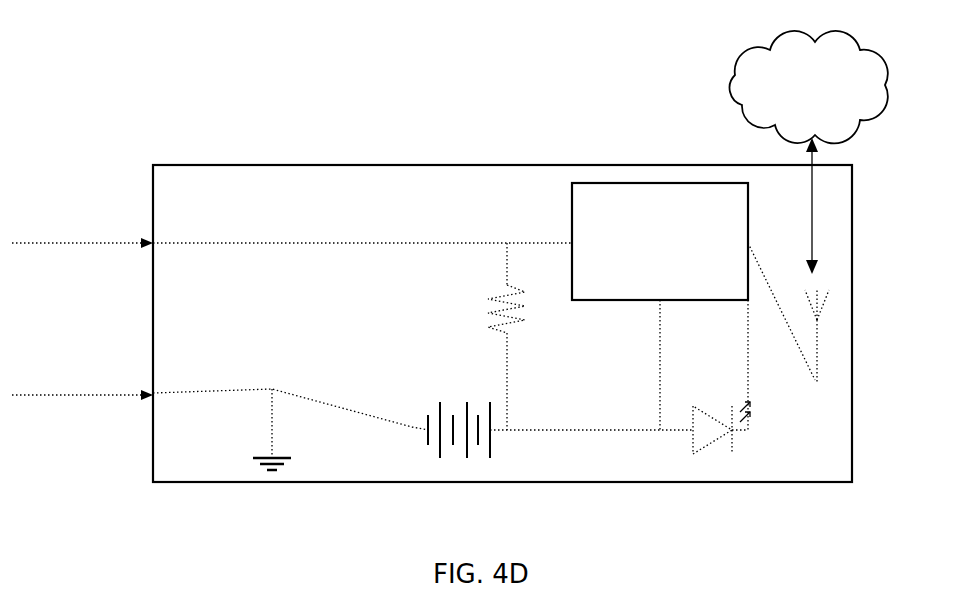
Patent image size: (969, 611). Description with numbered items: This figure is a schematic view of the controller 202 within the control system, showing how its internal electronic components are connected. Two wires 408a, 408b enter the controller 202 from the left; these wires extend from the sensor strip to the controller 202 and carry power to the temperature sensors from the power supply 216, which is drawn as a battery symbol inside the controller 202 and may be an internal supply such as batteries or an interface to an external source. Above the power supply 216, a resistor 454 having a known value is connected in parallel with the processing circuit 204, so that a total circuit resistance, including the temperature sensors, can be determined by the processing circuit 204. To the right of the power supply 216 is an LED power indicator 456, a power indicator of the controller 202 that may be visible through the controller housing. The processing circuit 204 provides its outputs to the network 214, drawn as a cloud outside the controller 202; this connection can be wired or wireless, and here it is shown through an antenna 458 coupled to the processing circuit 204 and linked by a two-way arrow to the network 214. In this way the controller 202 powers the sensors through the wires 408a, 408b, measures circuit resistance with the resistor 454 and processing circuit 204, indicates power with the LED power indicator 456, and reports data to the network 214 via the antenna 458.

The controller 202 is at (458, 165).
The processing circuit 204 is at (677, 254).
The network 214 is at (727, 87).
The power supply 216 is at (430, 390).
The wire 408a is at (292, 231).
The wire 408b is at (220, 398).
The resistor 454 is at (475, 310).
The LED power indicator 456 is at (752, 452).
The antenna 458 is at (840, 321).